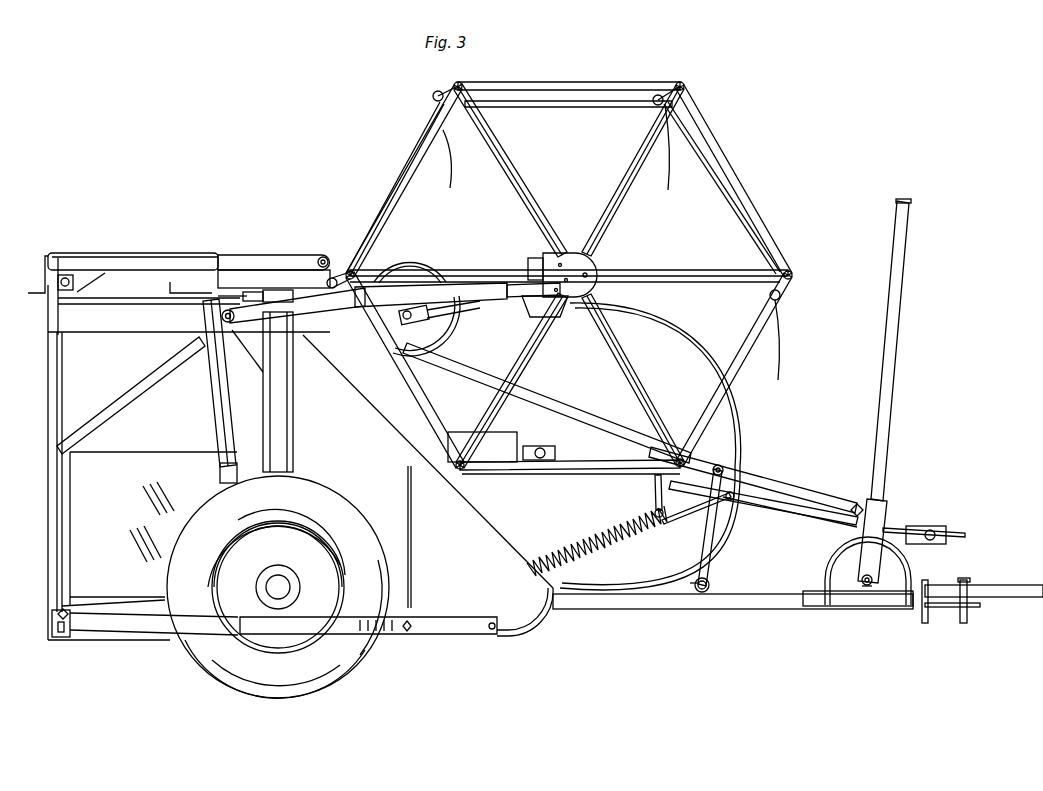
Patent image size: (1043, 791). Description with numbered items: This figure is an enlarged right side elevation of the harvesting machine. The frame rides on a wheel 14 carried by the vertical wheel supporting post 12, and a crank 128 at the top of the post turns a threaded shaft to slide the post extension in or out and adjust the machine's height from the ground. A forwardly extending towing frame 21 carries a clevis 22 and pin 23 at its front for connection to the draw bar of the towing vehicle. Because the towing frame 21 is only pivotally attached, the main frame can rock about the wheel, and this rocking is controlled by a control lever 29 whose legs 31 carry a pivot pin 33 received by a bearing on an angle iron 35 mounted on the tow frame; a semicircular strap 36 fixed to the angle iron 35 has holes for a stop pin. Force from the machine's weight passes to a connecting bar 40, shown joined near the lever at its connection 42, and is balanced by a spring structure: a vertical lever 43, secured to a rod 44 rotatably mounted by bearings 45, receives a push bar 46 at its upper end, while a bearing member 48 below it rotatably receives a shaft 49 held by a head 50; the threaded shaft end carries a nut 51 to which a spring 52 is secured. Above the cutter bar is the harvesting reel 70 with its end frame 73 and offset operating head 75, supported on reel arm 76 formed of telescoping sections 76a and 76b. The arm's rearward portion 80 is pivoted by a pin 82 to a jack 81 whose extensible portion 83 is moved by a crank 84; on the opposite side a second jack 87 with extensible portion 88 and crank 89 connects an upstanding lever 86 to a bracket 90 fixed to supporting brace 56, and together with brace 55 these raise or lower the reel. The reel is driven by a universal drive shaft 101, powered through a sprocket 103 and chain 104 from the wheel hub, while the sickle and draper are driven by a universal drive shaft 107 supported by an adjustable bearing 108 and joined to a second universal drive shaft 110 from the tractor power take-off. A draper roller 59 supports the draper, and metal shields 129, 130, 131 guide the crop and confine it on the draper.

The harvesting reel 70 is at (600, 78).
The offset operating head 75 is at (722, 140).
The end frame 73 is at (708, 203).
The telescoping section 76a is at (537, 268).
The telescoping section 76b is at (510, 280).
The reel arm 76 is at (348, 312).
The rearwardly extending portion 80 is at (255, 332).
The pin 82 is at (222, 318).
The chain 104 is at (420, 268).
The sprocket 103 is at (440, 335).
The universal drive shaft 101 is at (470, 310).
The second jack 87 is at (150, 252).
The extensible portion 88 is at (250, 255).
The crank 128 is at (228, 284).
The upstanding lever 86 is at (342, 260).
The crank 89 is at (40, 283).
The bracket 90 is at (55, 312).
The crank 84 is at (168, 290).
The jack 81 is at (215, 408).
The extensible portion 83 is at (218, 473).
The supporting brace 55 is at (130, 400).
The wheel supporting post 12 is at (292, 428).
The second supporting brace 56 is at (50, 385).
The metal shield 131 is at (57, 530).
The metal shield 130 is at (137, 511).
The metal shield 129 is at (452, 580).
The draper roller 59 is at (55, 628).
The wheel 14 is at (345, 672).
The push bar 46 is at (560, 425).
The head 50 is at (740, 470).
The connecting bar 40 is at (790, 481).
The pivot pin 42 is at (855, 504).
The control lever 29 is at (900, 310).
The leg 31 is at (885, 512).
The second universal drive shaft 110 is at (968, 536).
The nut 51 is at (655, 508).
The spring 52 is at (580, 545).
The shaft 49 is at (690, 520).
The bearing member 48 is at (735, 500).
The universal drive shaft 107 is at (815, 518).
The bearing 108 is at (850, 524).
The semicircular strap 36 is at (826, 565).
The vertical lever 43 is at (712, 560).
The rod 44 is at (695, 585).
The bearing 45 is at (712, 585).
The pivot pin 33 is at (867, 594).
The angle iron 35 is at (825, 607).
The towing frame 21 is at (733, 610).
The clevis 22 is at (928, 615).
The pin 23 is at (975, 618).